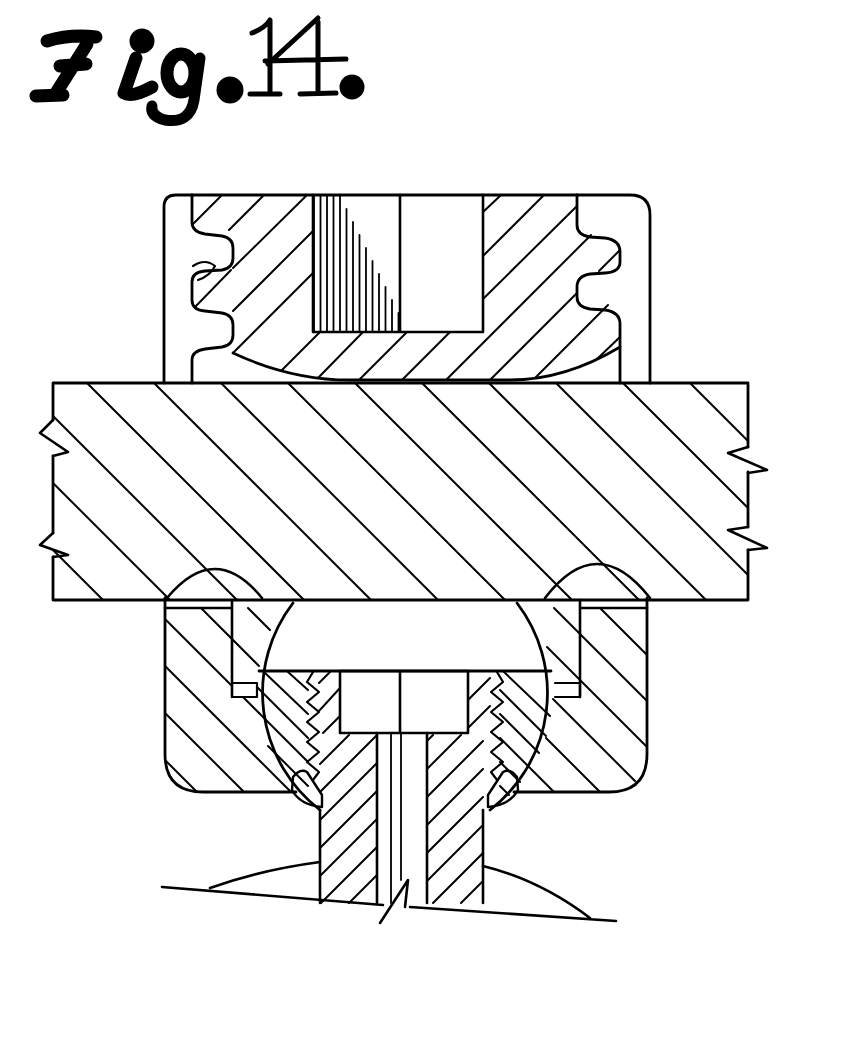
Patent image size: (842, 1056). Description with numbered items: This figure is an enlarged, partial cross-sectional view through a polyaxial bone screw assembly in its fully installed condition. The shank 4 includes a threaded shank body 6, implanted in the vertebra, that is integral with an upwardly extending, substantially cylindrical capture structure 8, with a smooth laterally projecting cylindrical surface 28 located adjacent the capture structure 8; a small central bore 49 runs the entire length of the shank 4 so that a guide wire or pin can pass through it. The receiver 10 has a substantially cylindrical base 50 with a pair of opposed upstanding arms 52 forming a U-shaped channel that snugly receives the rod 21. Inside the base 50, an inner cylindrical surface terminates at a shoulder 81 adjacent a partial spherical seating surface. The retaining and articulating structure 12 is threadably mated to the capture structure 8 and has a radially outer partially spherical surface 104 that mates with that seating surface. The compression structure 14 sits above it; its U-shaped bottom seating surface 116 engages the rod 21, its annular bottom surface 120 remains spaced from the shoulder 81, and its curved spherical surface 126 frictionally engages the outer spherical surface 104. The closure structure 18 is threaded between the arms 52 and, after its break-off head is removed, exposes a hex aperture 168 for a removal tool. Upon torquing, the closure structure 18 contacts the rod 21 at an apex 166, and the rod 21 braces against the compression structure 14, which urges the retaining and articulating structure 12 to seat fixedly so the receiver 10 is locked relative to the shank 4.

The shank 4 is at (327, 838).
The shank body 6 is at (480, 873).
The capture structure 8 is at (277, 722).
The receiver 10 is at (650, 282).
The retaining and articulating structure 12 is at (527, 730).
The compression structure 14 is at (557, 643).
The closure structure 18 is at (547, 212).
The rod 21 is at (125, 585).
The cylindrical surface 28 is at (547, 797).
The central bore 49 is at (426, 816).
The base 50 is at (258, 655).
The arms 52 is at (164, 265).
The shoulder 81 is at (583, 677).
The outer spherical surface 104 is at (620, 791).
The bottom seating surface 116 is at (170, 590).
The bottom surface 120 is at (262, 680).
The spherical surface 126 is at (295, 636).
The apex 166 is at (410, 387).
The hex aperture 168 is at (433, 213).